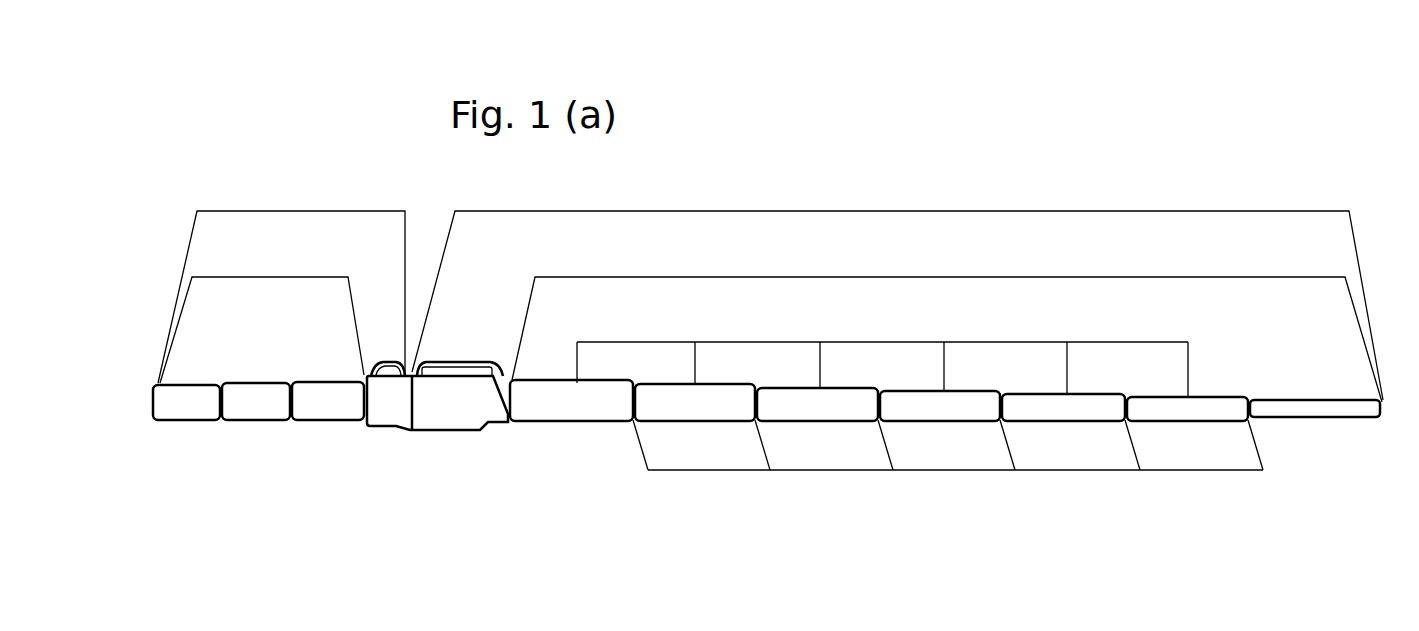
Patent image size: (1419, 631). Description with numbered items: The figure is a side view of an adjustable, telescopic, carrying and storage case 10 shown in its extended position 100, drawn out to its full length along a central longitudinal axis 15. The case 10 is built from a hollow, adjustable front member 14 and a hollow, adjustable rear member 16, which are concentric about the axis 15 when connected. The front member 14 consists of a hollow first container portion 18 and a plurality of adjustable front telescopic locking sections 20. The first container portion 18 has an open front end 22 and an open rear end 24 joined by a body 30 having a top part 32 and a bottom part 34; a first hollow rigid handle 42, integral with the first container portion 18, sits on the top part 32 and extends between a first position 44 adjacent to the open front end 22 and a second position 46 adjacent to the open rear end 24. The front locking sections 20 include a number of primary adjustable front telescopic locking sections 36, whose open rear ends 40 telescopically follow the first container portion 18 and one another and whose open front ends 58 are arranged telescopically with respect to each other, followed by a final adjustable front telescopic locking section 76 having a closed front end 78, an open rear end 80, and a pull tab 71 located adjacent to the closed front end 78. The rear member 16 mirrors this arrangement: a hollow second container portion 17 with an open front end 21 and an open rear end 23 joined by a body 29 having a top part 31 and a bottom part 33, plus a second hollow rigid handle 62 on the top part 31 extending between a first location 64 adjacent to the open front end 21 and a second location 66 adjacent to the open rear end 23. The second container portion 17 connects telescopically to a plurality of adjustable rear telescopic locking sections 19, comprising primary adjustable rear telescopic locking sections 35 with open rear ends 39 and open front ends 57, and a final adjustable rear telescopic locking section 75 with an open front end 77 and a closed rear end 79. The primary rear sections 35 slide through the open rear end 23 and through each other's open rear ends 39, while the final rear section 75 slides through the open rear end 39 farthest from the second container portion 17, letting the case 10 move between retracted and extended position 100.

The extended position 100 is at (880, 98).
The adjustable, telescopic, carrying and storage case 10 is at (737, 560).
The front member 14 is at (880, 211).
The central longitudinal axis 15 is at (153, 403).
The rear member 16 is at (312, 211).
The second container portion 17 is at (392, 415).
The first container portion 18 is at (420, 432).
The adjustable rear telescopic locking sections 19 is at (268, 277).
The adjustable front telescopic locking sections 20 is at (880, 277).
The open front end 21 is at (417, 432).
The open front end 22 is at (512, 400).
The open rear end 23 is at (367, 403).
The open rear end 24 is at (425, 432).
The body 29 is at (384, 423).
The body 30 is at (467, 425).
The top part 31 is at (375, 395).
The top part 32 is at (505, 400).
The bottom part 33 is at (378, 428).
The bottom part 34 is at (483, 432).
The primary adjustable rear telescopic locking sections 35 is at (310, 381).
The primary adjustable front telescopic locking sections 36 is at (880, 342).
The open rear ends 39 is at (290, 408).
The open rear ends 40 is at (510, 404).
The first hollow rigid handle 42 is at (468, 362).
The first position 44 is at (508, 380).
The second position 46 is at (414, 365).
The open front ends 57 is at (362, 408).
The open front ends 58 is at (914, 470).
The second hollow rigid handle 62 is at (397, 362).
The first location 64 is at (409, 368).
The second location 66 is at (368, 358).
The pull tab 71 is at (1380, 415).
The final adjustable rear telescopic locking section 75 is at (196, 374).
The final adjustable front telescopic locking section 76 is at (1280, 399).
The open front end 77 is at (220, 402).
The closed front end 78 is at (1365, 415).
The closed rear end 79 is at (152, 420).
The open rear end 80 is at (1250, 420).